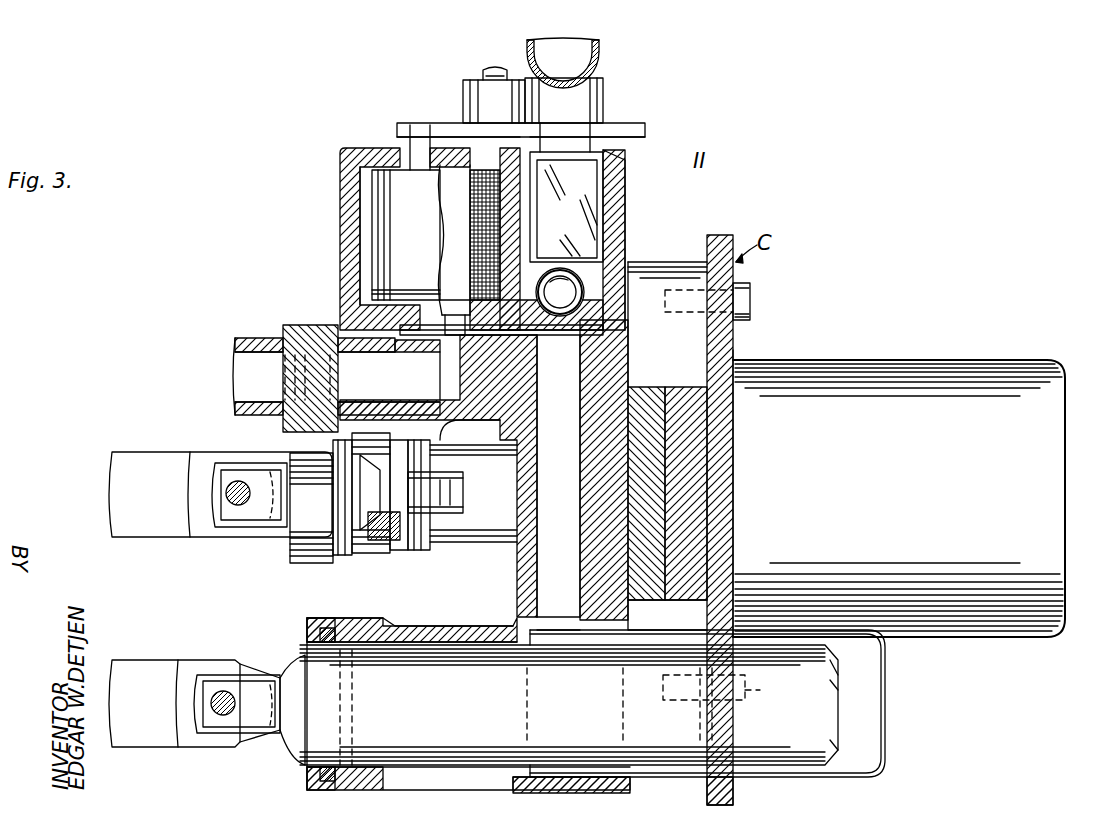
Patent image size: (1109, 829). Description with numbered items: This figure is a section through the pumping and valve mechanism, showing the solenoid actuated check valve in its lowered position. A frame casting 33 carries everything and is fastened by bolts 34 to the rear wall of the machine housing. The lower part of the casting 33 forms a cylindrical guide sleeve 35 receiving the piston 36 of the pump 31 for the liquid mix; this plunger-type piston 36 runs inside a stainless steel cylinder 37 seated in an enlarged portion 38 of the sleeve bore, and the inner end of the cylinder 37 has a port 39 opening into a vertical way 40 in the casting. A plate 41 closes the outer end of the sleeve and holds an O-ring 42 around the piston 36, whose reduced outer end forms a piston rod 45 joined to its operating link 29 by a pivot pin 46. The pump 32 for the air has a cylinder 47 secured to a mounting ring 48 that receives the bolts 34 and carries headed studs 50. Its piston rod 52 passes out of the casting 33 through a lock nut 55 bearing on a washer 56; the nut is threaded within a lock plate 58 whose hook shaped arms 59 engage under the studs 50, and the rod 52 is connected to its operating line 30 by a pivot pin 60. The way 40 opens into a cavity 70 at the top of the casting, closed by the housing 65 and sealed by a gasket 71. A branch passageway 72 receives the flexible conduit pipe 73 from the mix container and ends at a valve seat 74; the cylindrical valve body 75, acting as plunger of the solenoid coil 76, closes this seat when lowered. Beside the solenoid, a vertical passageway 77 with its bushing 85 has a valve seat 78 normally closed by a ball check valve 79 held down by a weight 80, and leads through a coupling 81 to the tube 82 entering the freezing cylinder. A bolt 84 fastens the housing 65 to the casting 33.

The operating link 29 is at (122, 746).
The operating line 30 is at (130, 465).
The pump for the liquid mix 31 is at (665, 780).
The pump for the air 32 is at (948, 552).
The frame casting 33 is at (622, 366).
The holding bolts 34 is at (752, 308).
The cylindrical guide sleeve 35 is at (425, 630).
The piston 36 is at (362, 665).
The cylinder 37 is at (790, 779).
The enlarged portion 38 is at (575, 790).
The port 39 is at (563, 630).
The vertical way 40 is at (530, 565).
The plate 41 is at (310, 620).
The O-ring 42 is at (325, 781).
The piston rod 45 is at (223, 680).
The pivot pin 46 is at (222, 708).
The cylinder 47 is at (1040, 408).
The mounting ring 48 is at (692, 374).
The headed studs 50 is at (452, 496).
The piston rod 52 is at (275, 527).
The lock nut 55 is at (300, 563).
The washer 56 is at (426, 545).
The lock plate 58 is at (398, 450).
The hook shaped arms 59 is at (380, 542).
The pivot pin 60 is at (238, 486).
The housing 65 is at (353, 232).
The cavity 70 is at (513, 337).
The sealing gasket 71 is at (603, 326).
The branch passageway 72 is at (440, 372).
The flexible conduit pipe 73 is at (246, 340).
The valve seat 74 is at (428, 352).
The cylindrical valve body 75 is at (448, 268).
The solenoid coil 76 is at (426, 231).
The vertically extending passageway 77 is at (630, 183).
The valve seat 78 is at (596, 288).
The ball check valve 79 is at (572, 303).
The weight 80 is at (592, 225).
The coupling 81 is at (588, 97).
The tube 82 is at (585, 50).
The bolt 84 is at (497, 72).
The bushing 85 is at (600, 140).